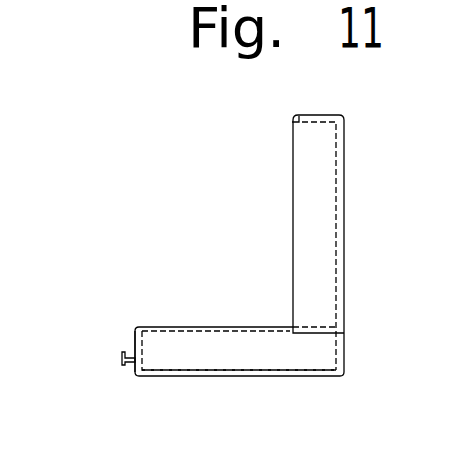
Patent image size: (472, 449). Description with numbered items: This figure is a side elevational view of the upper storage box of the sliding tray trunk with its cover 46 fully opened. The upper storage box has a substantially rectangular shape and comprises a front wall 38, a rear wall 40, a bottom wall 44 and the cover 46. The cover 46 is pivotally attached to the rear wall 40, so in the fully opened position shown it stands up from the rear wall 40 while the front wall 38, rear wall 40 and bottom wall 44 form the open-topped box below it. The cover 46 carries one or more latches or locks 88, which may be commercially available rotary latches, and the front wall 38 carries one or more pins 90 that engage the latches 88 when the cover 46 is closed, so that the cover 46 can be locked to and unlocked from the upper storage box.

The front wall 38 is at (134, 341).
The rear wall 40 is at (345, 352).
The bottom wall 44 is at (237, 376).
The cover 46 is at (316, 90).
The latch 88 is at (313, 92).
The pin 90 is at (121, 359).